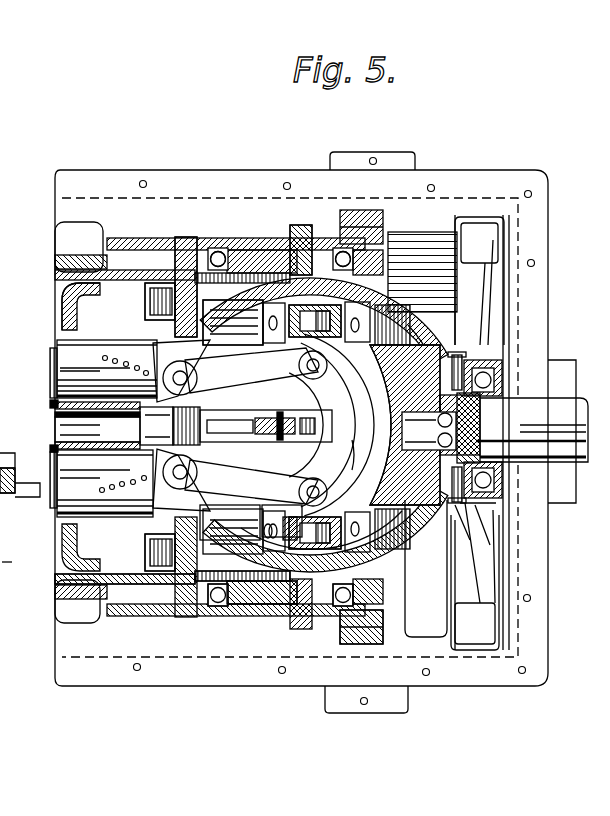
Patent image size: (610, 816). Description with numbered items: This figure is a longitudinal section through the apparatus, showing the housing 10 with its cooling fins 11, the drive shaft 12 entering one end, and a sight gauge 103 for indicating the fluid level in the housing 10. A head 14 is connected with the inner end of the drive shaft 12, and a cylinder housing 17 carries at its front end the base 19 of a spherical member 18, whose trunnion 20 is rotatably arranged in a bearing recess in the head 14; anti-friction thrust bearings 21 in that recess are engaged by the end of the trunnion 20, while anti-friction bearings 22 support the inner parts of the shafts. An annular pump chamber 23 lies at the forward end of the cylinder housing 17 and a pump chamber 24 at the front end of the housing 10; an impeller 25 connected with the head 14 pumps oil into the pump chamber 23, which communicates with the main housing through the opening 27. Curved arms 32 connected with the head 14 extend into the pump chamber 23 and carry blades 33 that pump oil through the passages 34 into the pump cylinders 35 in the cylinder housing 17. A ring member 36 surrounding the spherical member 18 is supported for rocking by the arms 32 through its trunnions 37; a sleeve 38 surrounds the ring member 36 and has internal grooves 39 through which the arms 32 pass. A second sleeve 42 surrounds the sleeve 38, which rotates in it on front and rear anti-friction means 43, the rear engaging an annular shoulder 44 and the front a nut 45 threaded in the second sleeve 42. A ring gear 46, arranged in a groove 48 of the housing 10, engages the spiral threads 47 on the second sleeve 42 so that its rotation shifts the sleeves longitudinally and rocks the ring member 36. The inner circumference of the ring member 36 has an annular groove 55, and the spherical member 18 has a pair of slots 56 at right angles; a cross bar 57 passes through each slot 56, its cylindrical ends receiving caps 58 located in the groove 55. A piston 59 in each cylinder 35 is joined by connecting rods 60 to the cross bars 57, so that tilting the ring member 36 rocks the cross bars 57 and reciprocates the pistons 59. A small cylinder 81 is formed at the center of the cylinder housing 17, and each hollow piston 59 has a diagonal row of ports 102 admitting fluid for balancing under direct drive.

The housing 10 is at (264, 163).
The cooling fins 11 is at (20, 420).
The drive shaft 12 is at (536, 462).
The head 14 is at (418, 520).
The cylinder housing 17 is at (68, 266).
The spherical member 18 is at (372, 388).
The base 19 is at (198, 512).
The trunnion 20 is at (324, 425).
The anti-friction thrust bearings 21 is at (466, 422).
The anti-friction bearings 22 is at (500, 382).
The pump chamber 23 is at (132, 603).
The pump chamber 24 is at (480, 285).
The impeller 25 is at (480, 640).
The opening 27 is at (200, 346).
The curved arms 32 is at (438, 325).
The blades 33 is at (158, 250).
The passages 34 is at (95, 290).
The pump cylinders 35 is at (55, 398).
The ring member 36 is at (405, 565).
The trunnions 37 is at (304, 252).
The sleeve 38 is at (250, 602).
The internal grooves 39 is at (196, 252).
The second sleeve 42 is at (158, 605).
The anti-friction means 43 is at (225, 252).
The annular shoulder 44 is at (215, 605).
The nut 45 is at (385, 607).
The ring gear 46 is at (362, 650).
The spiral threads 47 is at (275, 640).
The groove 48 is at (330, 644).
The annular groove 55 is at (335, 516).
The slots 56 is at (352, 457).
The cross bar 57 is at (304, 398).
The caps 58 is at (325, 312).
The piston 59 is at (103, 428).
The connecting rods 60 is at (240, 460).
The small cylinder 81 is at (127, 425).
The ports 102 is at (147, 369).
The sight gauge 103 is at (10, 608).